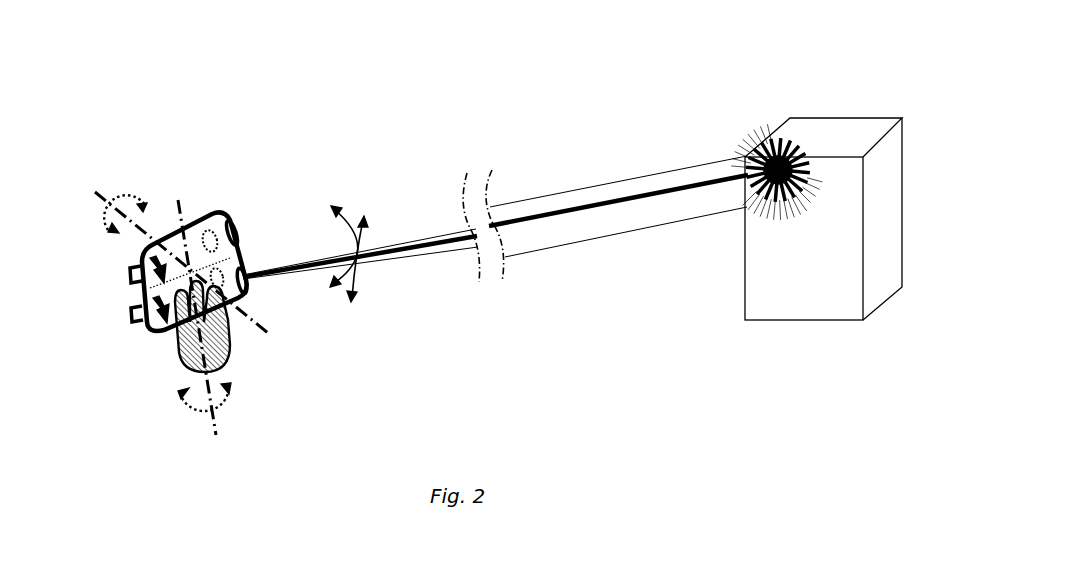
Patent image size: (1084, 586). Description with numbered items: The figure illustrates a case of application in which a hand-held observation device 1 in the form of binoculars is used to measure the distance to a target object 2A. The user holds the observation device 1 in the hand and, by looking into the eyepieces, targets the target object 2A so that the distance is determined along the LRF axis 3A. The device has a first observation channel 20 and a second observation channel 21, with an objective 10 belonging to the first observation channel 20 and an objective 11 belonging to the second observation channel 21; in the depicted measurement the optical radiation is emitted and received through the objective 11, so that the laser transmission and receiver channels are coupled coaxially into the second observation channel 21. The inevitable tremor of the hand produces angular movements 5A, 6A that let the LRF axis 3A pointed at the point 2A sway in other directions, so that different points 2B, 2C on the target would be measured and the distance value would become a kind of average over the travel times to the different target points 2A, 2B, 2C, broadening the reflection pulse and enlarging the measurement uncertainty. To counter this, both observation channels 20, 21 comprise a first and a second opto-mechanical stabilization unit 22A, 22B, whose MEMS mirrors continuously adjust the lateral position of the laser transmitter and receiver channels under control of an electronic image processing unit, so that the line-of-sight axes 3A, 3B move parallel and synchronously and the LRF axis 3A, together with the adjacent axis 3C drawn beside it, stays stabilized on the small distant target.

The observation device 1 is at (181, 274).
The objective 10 is at (223, 241).
The objective 11 is at (269, 245).
The first observation channel 20 is at (93, 283).
The second observation channel 21 is at (93, 324).
The first opto-mechanical stabilization unit 22A is at (245, 175).
The second opto-mechanical stabilization unit 22B is at (301, 307).
The LRF axis 3A is at (495, 179).
The line-of-sight axis 3B is at (495, 194).
The wire 3C is at (495, 243).
The target object 2A is at (844, 149).
The target point 2B is at (811, 104).
The target point 2C is at (850, 213).
The angular movement 5A is at (373, 259).
The angular movement 6A is at (364, 245).